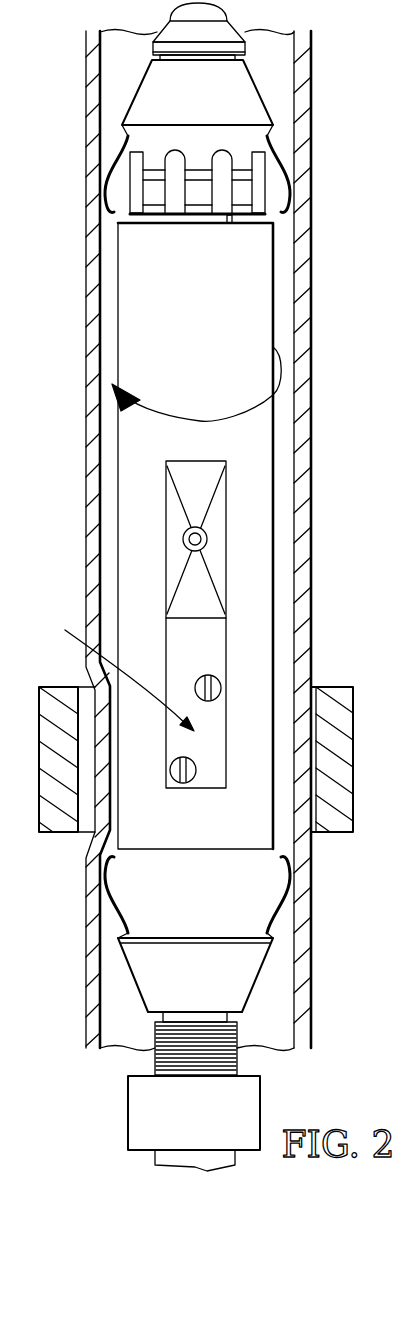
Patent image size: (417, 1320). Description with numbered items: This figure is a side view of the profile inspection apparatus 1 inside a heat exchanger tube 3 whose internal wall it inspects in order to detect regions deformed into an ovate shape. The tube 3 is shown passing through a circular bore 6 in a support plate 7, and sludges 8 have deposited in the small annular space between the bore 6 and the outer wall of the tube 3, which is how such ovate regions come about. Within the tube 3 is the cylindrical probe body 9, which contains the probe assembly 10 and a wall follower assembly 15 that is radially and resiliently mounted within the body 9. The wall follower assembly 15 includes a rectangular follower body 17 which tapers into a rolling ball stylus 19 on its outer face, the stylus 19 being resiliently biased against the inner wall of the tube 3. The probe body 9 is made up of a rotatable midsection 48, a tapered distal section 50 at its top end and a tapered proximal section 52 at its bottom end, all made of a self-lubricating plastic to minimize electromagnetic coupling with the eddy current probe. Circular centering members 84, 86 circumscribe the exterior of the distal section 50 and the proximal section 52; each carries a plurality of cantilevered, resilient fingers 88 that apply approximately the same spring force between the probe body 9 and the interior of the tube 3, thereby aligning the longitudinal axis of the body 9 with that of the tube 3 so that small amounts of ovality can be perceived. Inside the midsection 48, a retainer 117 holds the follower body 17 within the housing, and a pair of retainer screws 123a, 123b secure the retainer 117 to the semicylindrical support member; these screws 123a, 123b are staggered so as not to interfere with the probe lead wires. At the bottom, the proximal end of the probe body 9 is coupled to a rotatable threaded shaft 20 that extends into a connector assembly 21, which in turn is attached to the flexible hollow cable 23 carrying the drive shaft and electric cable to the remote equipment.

The profile inspection apparatus 1 is at (80, 115).
The heat exchanger tube 3 is at (308, 200).
The circular bore 6 is at (311, 757).
The support plate 7 is at (331, 700).
The sludges 8 is at (86, 833).
The cylindrical probe body 9 is at (288, 288).
The probe assembly 10 is at (408, 469).
The wall follower assembly 15 is at (152, 498).
The follower body 17 is at (210, 574).
The rolling ball stylus 19 is at (207, 538).
The rotatable threaded shaft 20 is at (237, 1058).
The connector assembly 21 is at (192, 1132).
The flexible hollow cable 23 is at (180, 1159).
The rotatable midsection 48 is at (188, 354).
The tapered distal section 50 is at (188, 104).
The tapered proximal section 52 is at (182, 992).
The circular centering member 84 is at (244, 148).
The circular centering member 86 is at (240, 915).
The resilient fingers 88 is at (122, 217).
The retainer 117 is at (109, 675).
The retainer screw 123a is at (218, 694).
The retainer screw 123b is at (190, 783).